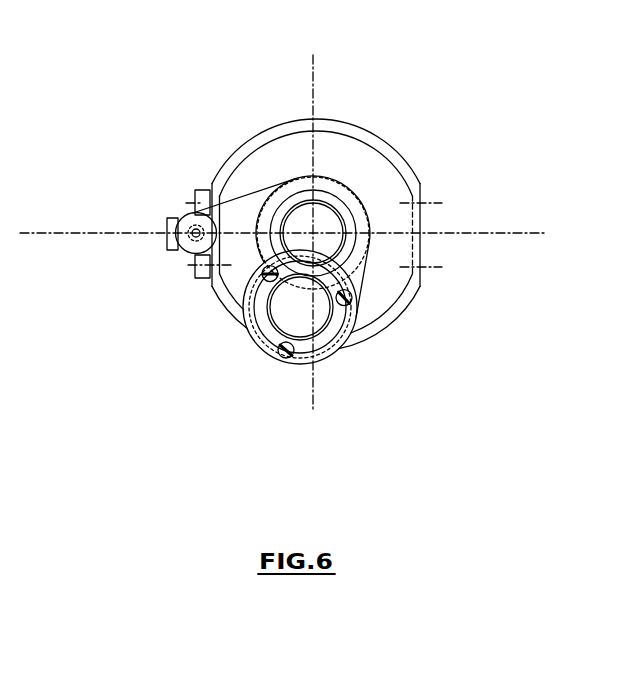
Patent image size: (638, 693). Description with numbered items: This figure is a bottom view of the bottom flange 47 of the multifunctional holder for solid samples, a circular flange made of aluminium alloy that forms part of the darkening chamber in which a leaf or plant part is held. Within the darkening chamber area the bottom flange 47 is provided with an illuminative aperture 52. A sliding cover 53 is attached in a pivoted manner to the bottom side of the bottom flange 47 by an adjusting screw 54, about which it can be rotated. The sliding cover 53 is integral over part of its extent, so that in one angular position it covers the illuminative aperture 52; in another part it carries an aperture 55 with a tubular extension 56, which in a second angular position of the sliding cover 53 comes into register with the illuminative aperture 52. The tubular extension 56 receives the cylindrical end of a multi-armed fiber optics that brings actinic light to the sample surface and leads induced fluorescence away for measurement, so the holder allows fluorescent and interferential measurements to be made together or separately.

The bottom flange 47 is at (342, 150).
The illuminative aperture 52 is at (325, 225).
The sliding cover 53 is at (252, 215).
The adjusting screw 54 is at (193, 228).
The aperture 55 is at (293, 307).
The tubular extension 56 is at (274, 347).